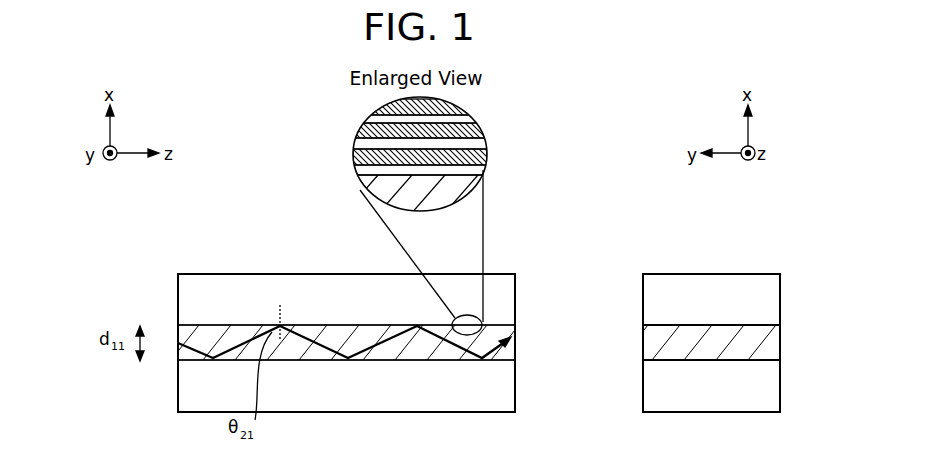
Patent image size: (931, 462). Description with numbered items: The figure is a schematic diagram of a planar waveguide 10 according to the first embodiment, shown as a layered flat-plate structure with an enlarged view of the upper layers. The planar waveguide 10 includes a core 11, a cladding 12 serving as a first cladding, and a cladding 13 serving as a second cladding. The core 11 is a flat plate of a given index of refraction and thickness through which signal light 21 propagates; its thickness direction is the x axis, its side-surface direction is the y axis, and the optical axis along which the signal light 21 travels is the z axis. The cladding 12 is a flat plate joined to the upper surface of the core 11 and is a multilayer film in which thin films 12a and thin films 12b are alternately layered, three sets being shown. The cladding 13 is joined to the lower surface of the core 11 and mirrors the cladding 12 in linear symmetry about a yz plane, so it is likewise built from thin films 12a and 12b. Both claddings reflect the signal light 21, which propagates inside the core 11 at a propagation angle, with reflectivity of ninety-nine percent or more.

The planar waveguide 10 is at (208, 273).
The core 11 is at (360, 183).
The cladding 12 is at (657, 298).
The thin film 12a is at (465, 120).
The thin film 12b is at (370, 132).
The cladding 13 is at (655, 383).
The signal light 21 is at (193, 355).